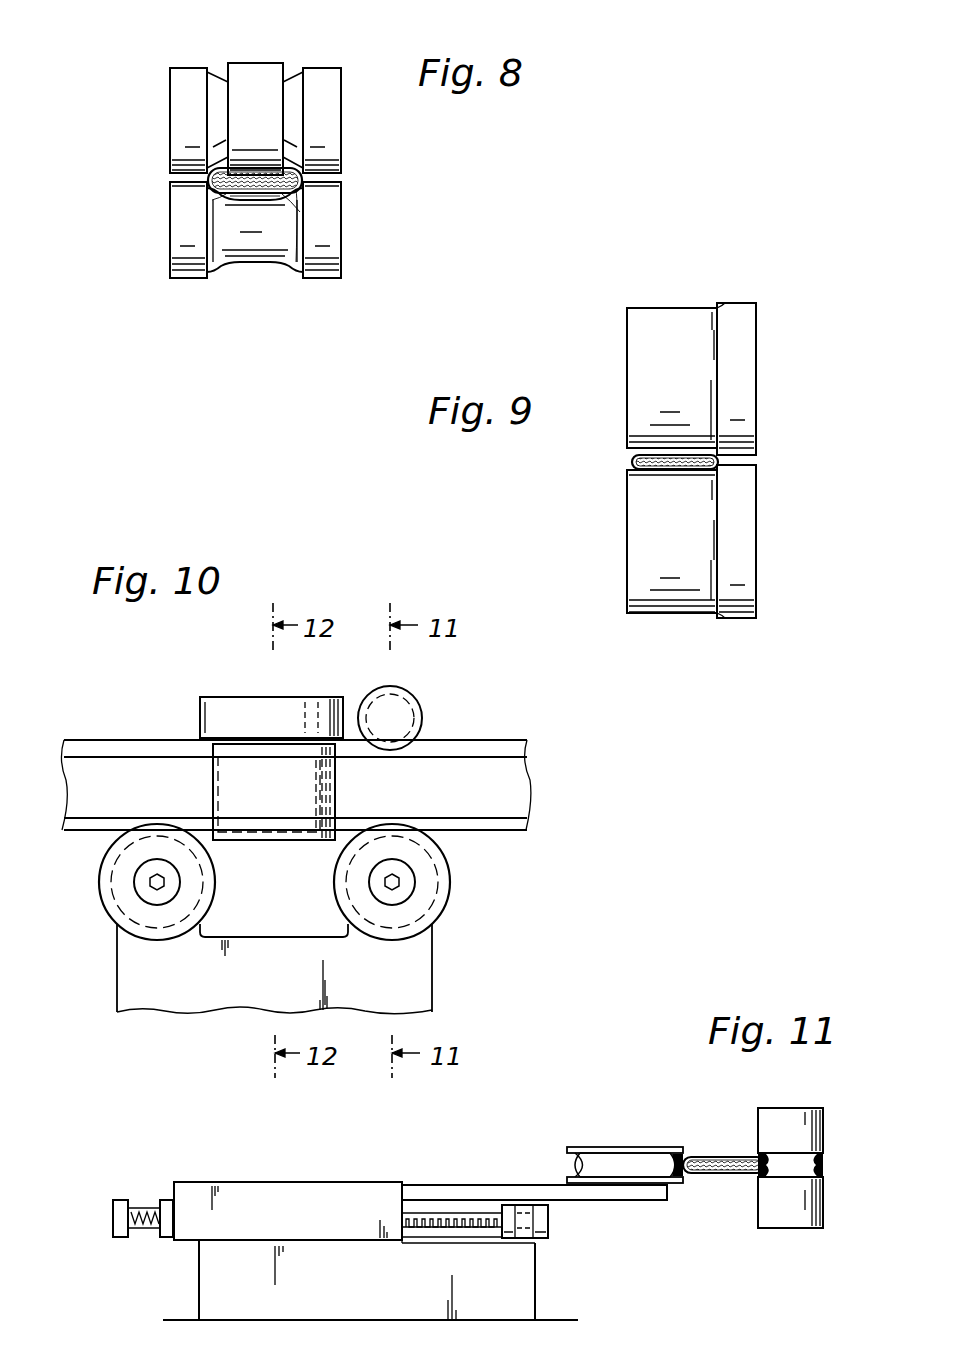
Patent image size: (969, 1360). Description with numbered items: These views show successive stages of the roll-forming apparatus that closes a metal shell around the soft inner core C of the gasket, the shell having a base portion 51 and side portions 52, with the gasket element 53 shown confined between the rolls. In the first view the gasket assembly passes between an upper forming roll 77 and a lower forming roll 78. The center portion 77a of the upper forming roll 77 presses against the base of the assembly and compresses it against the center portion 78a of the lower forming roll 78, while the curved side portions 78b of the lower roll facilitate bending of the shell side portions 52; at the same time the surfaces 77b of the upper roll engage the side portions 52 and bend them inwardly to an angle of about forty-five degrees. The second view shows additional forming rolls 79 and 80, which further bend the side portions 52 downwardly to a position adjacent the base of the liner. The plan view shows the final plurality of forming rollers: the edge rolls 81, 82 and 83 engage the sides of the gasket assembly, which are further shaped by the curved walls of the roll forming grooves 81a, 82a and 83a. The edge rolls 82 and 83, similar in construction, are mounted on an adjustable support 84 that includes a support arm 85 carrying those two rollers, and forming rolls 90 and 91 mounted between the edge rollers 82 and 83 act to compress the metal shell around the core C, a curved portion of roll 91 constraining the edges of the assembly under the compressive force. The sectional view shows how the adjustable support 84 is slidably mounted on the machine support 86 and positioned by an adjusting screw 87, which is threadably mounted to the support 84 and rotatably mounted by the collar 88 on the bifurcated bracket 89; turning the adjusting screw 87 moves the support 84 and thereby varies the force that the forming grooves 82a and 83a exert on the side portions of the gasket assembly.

In FIG. 8, the upper forming roll 77 is at (172, 97).
In FIG. 8, the center portion 77a is at (247, 62).
In FIG. 8, the surfaces 77b is at (222, 76).
In FIG. 8, the cable 53 is at (248, 176).
In FIG. 8, the forming roll 78 is at (172, 256).
In FIG. 8, the center portion 78a is at (238, 258).
In FIG. 8, the side portions 78b is at (303, 268).
In FIG. 8, the base portion 51 is at (255, 196).
In FIG. 8, the side portions 52 is at (282, 196).
In FIG. 8, the inner core C is at (230, 196).
In FIG. 9, the forming roll 79 is at (745, 390).
In FIG. 9, the forming roll 80 is at (743, 528).
In FIG. 10, the forming roll 91 is at (222, 708).
In FIG. 10, the forming roll 90 is at (222, 773).
In FIG. 10, the edge roll 81 is at (412, 696).
In FIG. 11, the edge roll 81 is at (815, 1128).
In FIG. 10, the roll forming groove 81a is at (414, 715).
In FIG. 11, the roll forming groove 81a is at (816, 1161).
In FIG. 10, the edge roll 83 is at (100, 897).
In FIG. 10, the roll forming groove 83a is at (108, 882).
In FIG. 10, the edge roll 82 is at (445, 894).
In FIG. 11, the edge roll 82 is at (601, 1150).
In FIG. 10, the roll forming groove 82a is at (440, 870).
In FIG. 11, the roll forming groove 82a is at (574, 1165).
In FIG. 10, the support arm 85 is at (415, 973).
In FIG. 11, the support arm 85 is at (653, 1194).
In FIG. 11, the adjusting screw 87 is at (144, 1208).
In FIG. 11, the adjustable support 84 is at (276, 1195).
In FIG. 11, the machine support 86 is at (524, 1287).
In FIG. 11, the collar 88 is at (544, 1222).
In FIG. 11, the bifurcated bracket 89 is at (510, 1238).